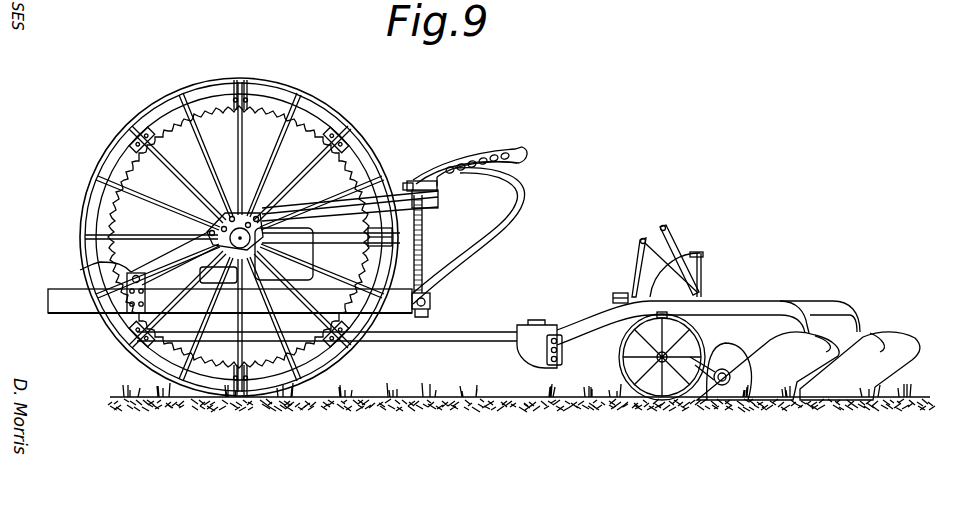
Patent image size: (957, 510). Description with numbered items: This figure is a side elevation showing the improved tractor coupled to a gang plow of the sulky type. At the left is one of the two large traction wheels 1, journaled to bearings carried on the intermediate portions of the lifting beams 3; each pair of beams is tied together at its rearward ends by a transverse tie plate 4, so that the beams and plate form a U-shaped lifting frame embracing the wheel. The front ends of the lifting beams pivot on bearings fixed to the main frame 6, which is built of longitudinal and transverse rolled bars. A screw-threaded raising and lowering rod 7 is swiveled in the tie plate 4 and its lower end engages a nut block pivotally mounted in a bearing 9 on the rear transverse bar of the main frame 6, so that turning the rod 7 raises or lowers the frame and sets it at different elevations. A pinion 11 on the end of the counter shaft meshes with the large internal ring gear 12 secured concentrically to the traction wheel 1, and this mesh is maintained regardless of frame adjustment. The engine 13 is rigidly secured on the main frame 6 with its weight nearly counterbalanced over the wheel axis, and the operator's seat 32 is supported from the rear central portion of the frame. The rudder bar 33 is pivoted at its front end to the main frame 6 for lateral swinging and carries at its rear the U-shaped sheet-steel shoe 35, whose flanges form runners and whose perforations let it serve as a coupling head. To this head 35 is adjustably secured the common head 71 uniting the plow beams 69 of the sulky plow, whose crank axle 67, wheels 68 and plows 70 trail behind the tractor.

The traction wheel 1 is at (283, 88).
The internal ring gear 12 is at (308, 118).
The lifting beam 3 is at (313, 208).
The engine 13 is at (298, 266).
The tie plate 4 is at (408, 181).
The operator's seat 32 is at (482, 232).
The raising and lowering rod 7 is at (423, 241).
The bearing 9 is at (428, 300).
The main frame 6 is at (230, 301).
The pinion 11 is at (125, 282).
The bar 33 is at (434, 341).
The ground-engaging means 35 is at (536, 332).
The common head 71 is at (562, 350).
The crank axle 67 is at (691, 318).
The wheels 68 is at (720, 394).
The plow beams 69 is at (782, 310).
The plows 70 is at (820, 348).